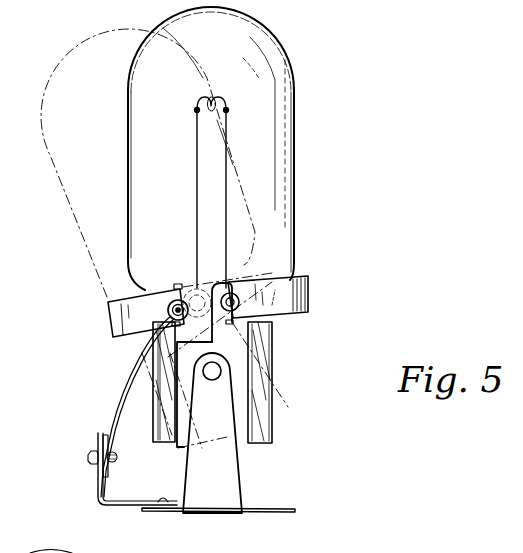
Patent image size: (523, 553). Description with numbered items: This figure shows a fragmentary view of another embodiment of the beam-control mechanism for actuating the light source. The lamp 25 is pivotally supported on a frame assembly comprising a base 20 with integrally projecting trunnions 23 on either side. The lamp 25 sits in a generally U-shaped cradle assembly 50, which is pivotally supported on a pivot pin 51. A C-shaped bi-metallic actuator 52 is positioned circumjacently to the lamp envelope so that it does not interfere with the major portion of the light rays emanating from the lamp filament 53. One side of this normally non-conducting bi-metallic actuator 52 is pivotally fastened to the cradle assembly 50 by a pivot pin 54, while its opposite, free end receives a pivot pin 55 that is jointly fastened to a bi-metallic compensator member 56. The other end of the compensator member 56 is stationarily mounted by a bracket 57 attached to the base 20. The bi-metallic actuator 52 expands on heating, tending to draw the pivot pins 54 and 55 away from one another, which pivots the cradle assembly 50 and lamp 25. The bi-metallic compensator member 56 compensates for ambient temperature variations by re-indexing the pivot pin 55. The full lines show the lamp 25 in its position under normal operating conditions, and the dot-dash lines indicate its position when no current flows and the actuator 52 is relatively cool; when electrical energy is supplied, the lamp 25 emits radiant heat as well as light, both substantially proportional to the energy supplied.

The base 20 is at (273, 508).
The trunnions 23 is at (228, 482).
The lamp 25 is at (282, 155).
The cradle assembly 50 is at (240, 433).
The pivot pin 51 is at (240, 382).
The bi-metallic actuator 52 is at (312, 296).
The lamp filament 53 is at (229, 109).
The pivot pin 54 is at (240, 300).
The pivot pin 55 is at (159, 310).
The bi-metallic compensator member 56 is at (127, 377).
The bracket 57 is at (98, 494).